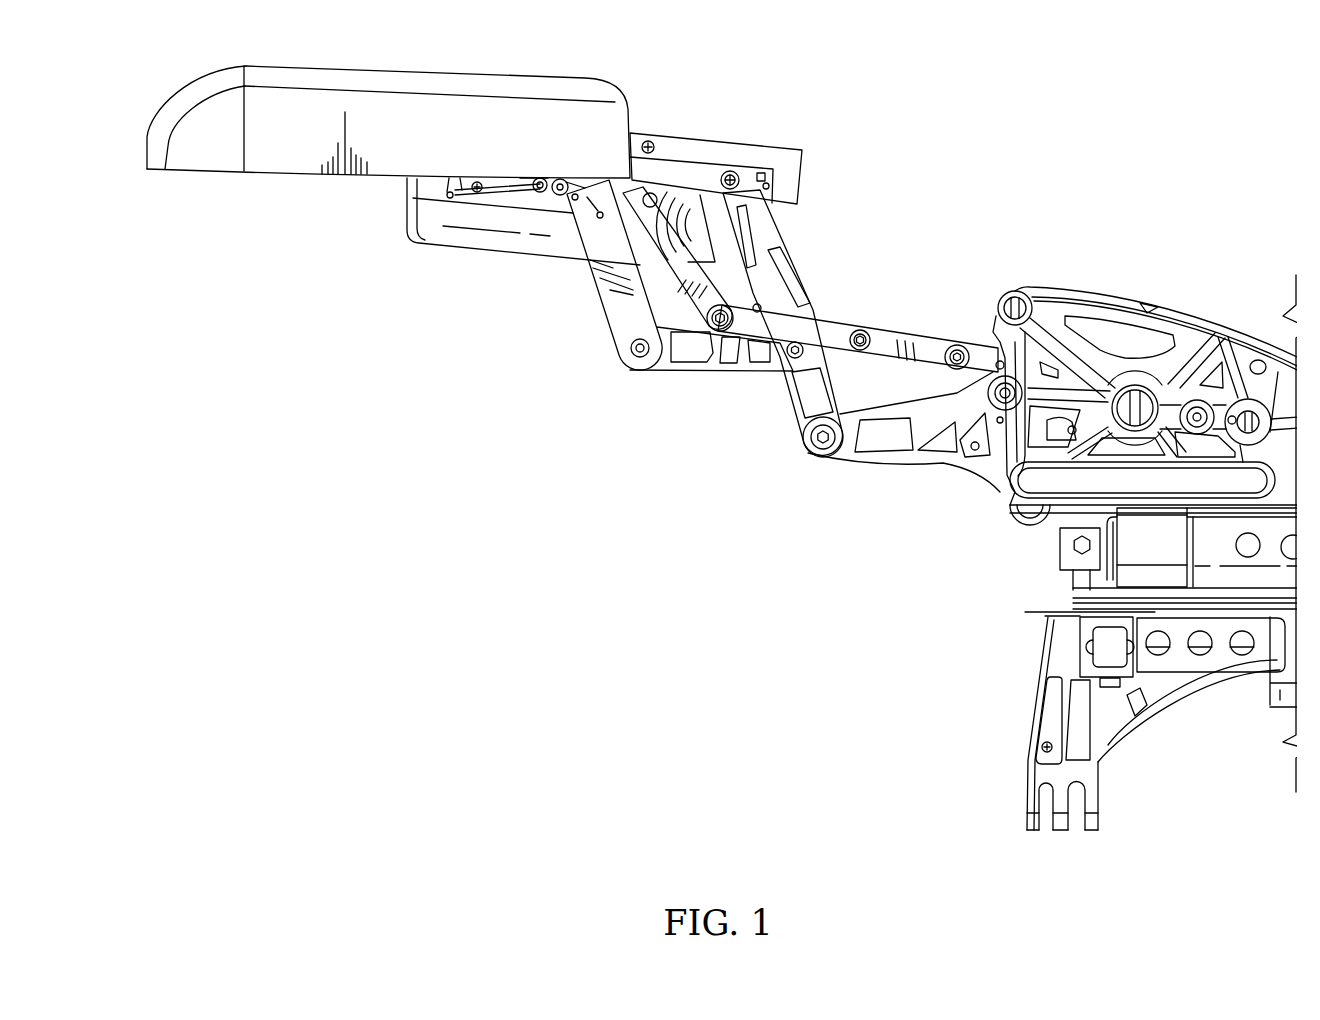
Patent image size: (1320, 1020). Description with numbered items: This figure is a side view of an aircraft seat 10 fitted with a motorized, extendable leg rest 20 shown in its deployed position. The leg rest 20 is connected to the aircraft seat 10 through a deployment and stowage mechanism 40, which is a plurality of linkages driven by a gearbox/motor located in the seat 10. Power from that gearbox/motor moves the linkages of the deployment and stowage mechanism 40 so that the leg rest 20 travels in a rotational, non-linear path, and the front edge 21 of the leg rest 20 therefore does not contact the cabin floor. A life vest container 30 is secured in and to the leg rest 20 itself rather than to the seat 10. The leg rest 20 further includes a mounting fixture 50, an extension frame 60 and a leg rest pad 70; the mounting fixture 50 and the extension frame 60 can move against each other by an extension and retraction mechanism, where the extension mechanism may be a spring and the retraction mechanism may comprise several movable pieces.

The aircraft seat 10 is at (1302, 845).
The leg rest 20 is at (1025, 845).
The front edge 21 is at (147, 152).
The life vest container 30 is at (500, 255).
The deployment and stowage mechanism 40 is at (744, 461).
The mounting fixture 50 is at (723, 133).
The extension frame 60 is at (289, 196).
The leg rest pad 70 is at (418, 78).